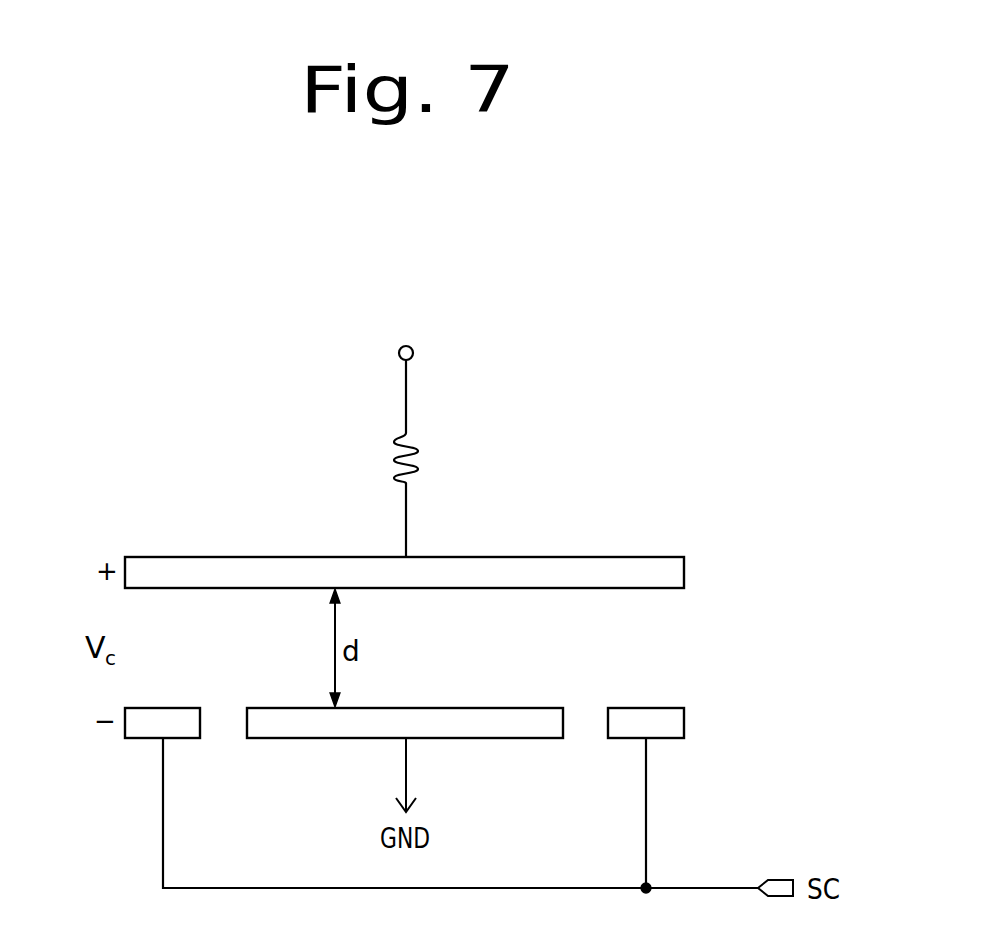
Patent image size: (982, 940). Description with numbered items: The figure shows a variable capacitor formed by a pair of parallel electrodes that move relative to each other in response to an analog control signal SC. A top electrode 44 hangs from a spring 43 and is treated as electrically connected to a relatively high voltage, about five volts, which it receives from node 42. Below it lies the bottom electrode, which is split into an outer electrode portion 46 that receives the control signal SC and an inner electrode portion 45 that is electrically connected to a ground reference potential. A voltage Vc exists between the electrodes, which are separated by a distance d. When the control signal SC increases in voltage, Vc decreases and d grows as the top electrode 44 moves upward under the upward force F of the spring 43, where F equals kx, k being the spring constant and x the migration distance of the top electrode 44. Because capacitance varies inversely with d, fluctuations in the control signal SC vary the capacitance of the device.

The node 42 is at (405, 344).
The spring 43 is at (383, 458).
The top electrode 44 is at (653, 552).
The inner electrode portion 45 is at (532, 706).
The outer electrode portion 46 is at (168, 706).